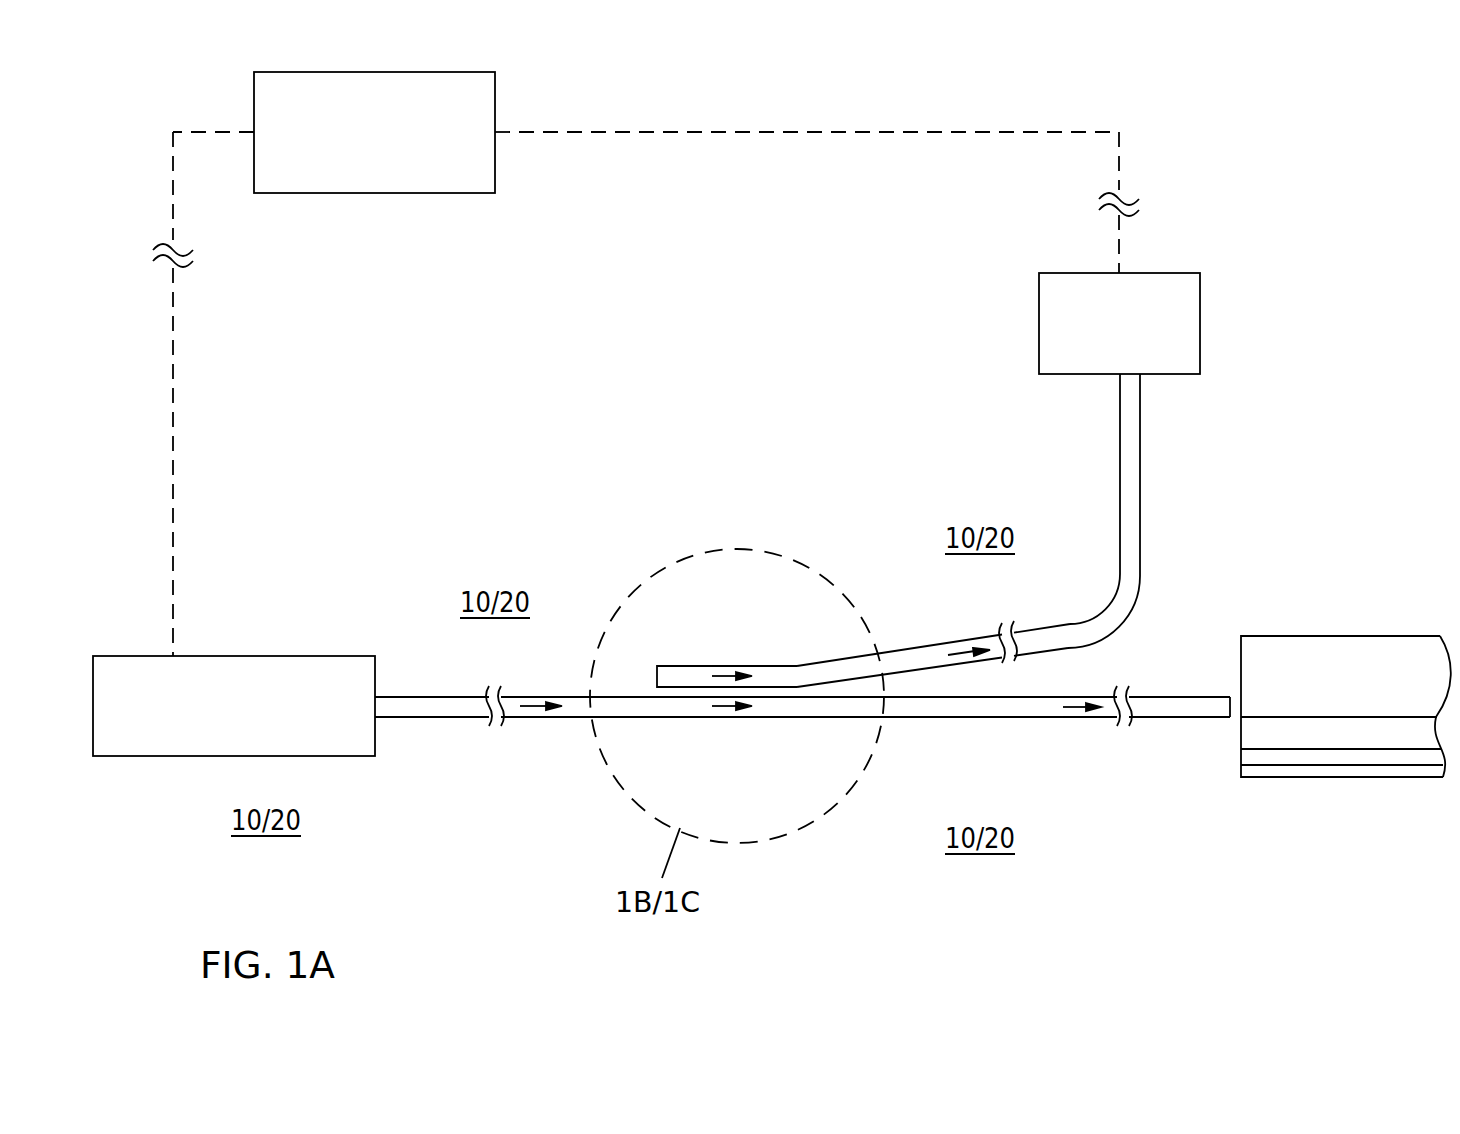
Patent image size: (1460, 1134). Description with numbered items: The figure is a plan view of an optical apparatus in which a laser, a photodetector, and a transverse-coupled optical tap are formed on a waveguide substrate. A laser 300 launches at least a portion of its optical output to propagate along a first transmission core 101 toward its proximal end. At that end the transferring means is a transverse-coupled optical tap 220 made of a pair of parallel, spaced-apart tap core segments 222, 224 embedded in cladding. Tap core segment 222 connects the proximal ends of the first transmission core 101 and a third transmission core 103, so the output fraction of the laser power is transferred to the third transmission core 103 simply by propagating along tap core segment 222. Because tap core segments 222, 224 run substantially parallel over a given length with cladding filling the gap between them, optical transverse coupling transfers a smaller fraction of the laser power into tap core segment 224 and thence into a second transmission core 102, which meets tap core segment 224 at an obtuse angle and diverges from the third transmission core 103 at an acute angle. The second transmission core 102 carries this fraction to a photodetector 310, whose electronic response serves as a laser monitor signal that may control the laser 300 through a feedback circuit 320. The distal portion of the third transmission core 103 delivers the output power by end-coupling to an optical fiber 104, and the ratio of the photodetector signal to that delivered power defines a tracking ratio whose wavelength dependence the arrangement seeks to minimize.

The first transmission core 101 is at (577, 705).
The second transmission core 102 is at (920, 652).
The third transmission core 103 is at (1195, 707).
The optical fiber 104 is at (1386, 691).
The transverse-coupled optical tap 220 is at (798, 727).
The tap core segment 222 is at (682, 707).
The tap core segment 224 is at (768, 677).
The laser 300 is at (258, 711).
The photodetector 310 is at (1143, 351).
The feedback circuit 320 is at (398, 148).